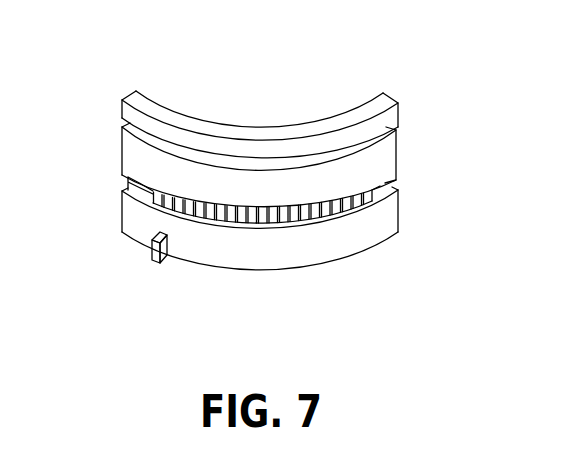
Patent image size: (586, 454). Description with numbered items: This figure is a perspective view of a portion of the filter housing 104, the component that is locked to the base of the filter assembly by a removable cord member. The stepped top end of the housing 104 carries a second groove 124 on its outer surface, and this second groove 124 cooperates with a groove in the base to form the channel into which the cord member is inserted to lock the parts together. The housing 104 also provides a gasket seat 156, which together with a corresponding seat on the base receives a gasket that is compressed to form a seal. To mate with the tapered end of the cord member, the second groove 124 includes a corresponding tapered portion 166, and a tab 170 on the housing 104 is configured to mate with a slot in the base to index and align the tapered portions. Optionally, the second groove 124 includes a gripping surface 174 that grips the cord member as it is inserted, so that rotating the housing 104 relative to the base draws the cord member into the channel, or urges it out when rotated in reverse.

The housing 104 is at (306, 112).
The gasket seat 156 is at (396, 125).
The second groove 124 is at (371, 194).
The tapered portion 166 is at (153, 192).
The tab 170 is at (167, 248).
The gripping surface 174 is at (263, 233).